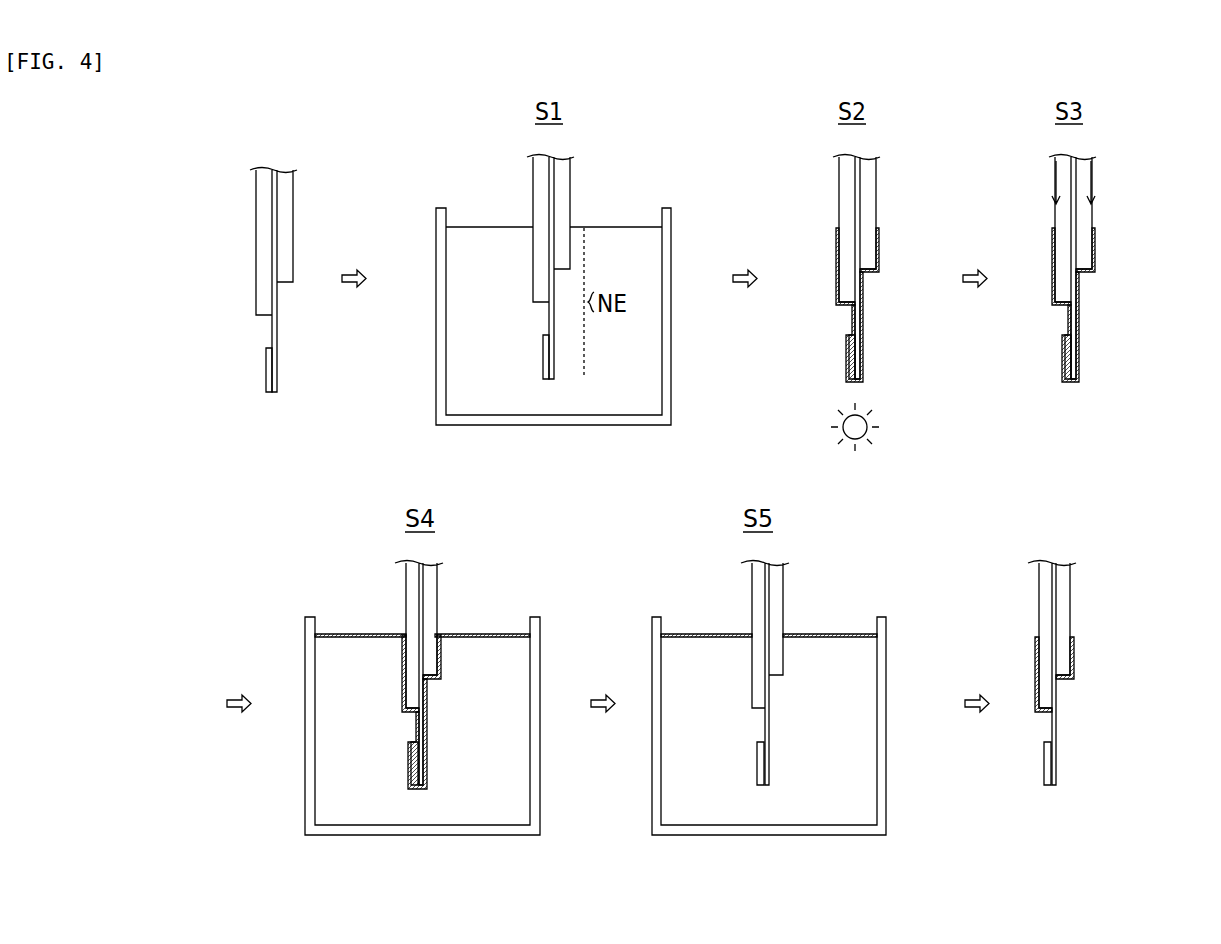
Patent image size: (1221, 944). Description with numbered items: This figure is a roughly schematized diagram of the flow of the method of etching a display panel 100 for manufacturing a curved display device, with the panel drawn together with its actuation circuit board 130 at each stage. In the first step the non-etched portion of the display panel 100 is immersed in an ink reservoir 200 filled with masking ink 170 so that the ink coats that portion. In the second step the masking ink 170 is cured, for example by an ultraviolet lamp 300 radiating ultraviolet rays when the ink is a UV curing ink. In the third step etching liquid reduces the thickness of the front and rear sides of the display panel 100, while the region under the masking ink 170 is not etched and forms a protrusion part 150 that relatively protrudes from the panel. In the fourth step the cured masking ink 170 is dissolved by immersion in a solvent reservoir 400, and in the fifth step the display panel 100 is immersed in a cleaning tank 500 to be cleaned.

The display panel 100 is at (265, 236).
The actuation circuit board 130 is at (269, 366).
The protrusion part 150 is at (1090, 238).
The masking ink 170 is at (492, 245).
The ink reservoir 200 is at (672, 245).
The ultraviolet lamp 300 is at (868, 417).
The solvent reservoir 400 is at (538, 660).
The cleaning tank 500 is at (887, 657).